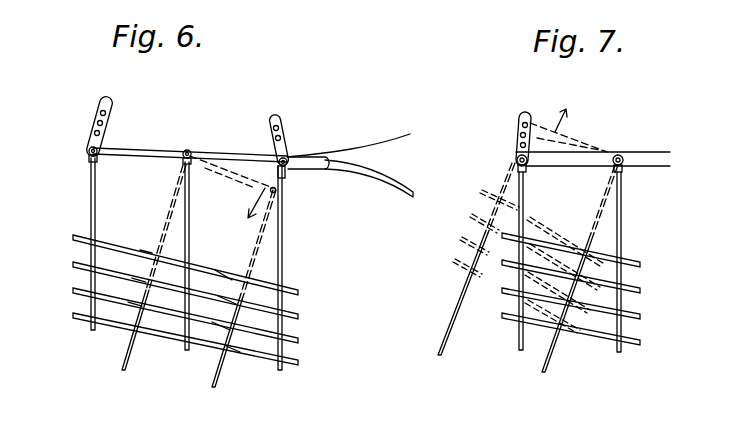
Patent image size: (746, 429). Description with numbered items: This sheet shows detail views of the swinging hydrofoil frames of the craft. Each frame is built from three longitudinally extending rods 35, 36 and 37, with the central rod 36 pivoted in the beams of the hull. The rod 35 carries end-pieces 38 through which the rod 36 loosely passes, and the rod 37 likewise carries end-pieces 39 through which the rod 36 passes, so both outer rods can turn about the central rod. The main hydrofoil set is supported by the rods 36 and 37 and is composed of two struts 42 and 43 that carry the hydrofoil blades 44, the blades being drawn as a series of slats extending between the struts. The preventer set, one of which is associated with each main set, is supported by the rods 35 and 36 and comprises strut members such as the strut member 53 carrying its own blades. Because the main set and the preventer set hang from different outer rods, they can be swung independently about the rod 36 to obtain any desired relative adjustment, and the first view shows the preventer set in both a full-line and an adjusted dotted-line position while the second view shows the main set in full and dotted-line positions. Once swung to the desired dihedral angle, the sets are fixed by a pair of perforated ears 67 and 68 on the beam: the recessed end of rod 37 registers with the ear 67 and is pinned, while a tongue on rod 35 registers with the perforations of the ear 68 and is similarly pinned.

In FIG. 6, the rod 35 is at (287, 161).
In FIG. 6, the rod 36 is at (191, 150).
In FIG. 7, the rod 36 is at (622, 157).
In FIG. 6, the rod 37 is at (88, 151).
In FIG. 7, the rod 37 is at (515, 158).
In FIG. 6, the end-pieces 38 is at (233, 162).
In FIG. 6, the end-pieces 39 is at (150, 150).
In FIG. 7, the end-pieces 39 is at (573, 158).
In FIG. 7, the strut 42 is at (625, 224).
In FIG. 6, the strut 43 is at (90, 197).
In FIG. 7, the strut 43 is at (521, 215).
In FIG. 7, the hydrofoil blades 44 is at (556, 268).
In FIG. 6, the strut member 53 is at (285, 227).
In FIG. 6, the ear 67 is at (109, 108).
In FIG. 7, the ear 67 is at (525, 120).
In FIG. 6, the ear 68 is at (285, 119).